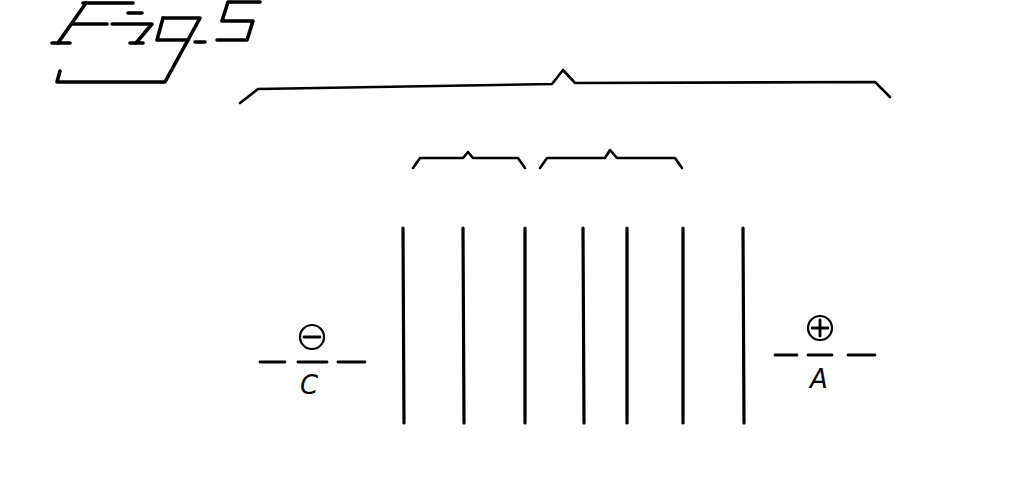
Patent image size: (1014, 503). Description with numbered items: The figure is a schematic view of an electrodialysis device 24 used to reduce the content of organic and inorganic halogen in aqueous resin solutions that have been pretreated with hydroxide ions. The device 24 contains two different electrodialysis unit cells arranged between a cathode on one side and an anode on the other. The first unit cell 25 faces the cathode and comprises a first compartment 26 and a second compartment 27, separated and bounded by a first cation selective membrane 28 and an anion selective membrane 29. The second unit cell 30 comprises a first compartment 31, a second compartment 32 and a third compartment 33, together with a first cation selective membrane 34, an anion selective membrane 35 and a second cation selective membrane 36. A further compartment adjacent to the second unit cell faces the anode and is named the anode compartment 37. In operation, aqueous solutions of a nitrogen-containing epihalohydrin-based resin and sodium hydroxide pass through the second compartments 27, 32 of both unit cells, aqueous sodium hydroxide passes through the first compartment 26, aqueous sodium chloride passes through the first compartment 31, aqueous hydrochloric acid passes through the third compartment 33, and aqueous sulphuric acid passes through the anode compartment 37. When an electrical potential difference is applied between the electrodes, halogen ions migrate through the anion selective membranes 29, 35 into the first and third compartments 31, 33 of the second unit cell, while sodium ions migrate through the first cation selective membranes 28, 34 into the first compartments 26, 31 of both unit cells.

The electrodialysis device 24 is at (565, 70).
The first unit cell 25 is at (469, 144).
The first compartment 26 is at (413, 291).
The second compartment 27 is at (471, 291).
The first cation selective membrane 28 is at (458, 308).
The anion selective membrane 29 is at (520, 308).
The second unit cell 30 is at (611, 144).
The first compartment 31 is at (531, 289).
The second compartment 32 is at (616, 289).
The third compartment 33 is at (661, 289).
The first cation selective membrane 34 is at (581, 308).
The anion selective membrane 35 is at (627, 308).
The second cation selective membrane 36 is at (680, 308).
The anode compartment 37 is at (692, 288).